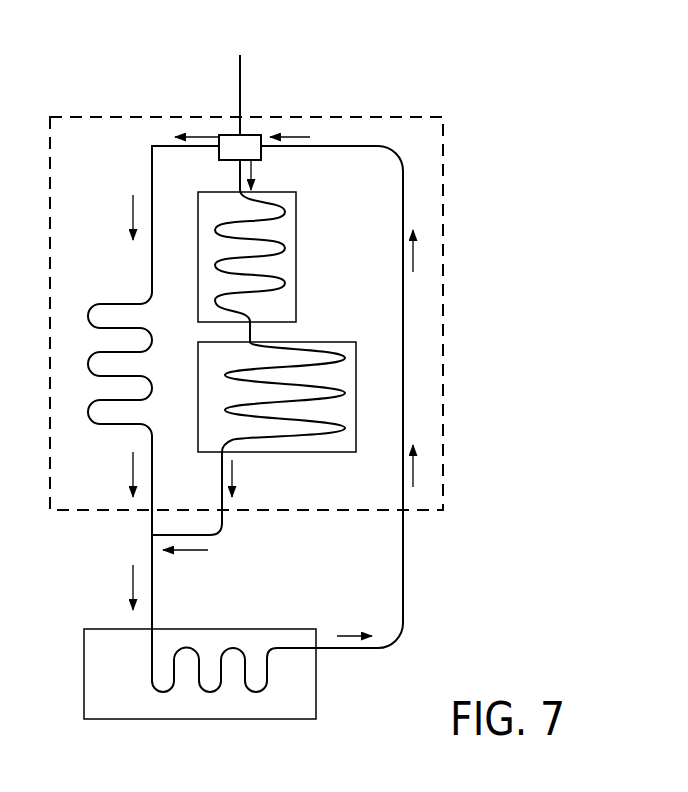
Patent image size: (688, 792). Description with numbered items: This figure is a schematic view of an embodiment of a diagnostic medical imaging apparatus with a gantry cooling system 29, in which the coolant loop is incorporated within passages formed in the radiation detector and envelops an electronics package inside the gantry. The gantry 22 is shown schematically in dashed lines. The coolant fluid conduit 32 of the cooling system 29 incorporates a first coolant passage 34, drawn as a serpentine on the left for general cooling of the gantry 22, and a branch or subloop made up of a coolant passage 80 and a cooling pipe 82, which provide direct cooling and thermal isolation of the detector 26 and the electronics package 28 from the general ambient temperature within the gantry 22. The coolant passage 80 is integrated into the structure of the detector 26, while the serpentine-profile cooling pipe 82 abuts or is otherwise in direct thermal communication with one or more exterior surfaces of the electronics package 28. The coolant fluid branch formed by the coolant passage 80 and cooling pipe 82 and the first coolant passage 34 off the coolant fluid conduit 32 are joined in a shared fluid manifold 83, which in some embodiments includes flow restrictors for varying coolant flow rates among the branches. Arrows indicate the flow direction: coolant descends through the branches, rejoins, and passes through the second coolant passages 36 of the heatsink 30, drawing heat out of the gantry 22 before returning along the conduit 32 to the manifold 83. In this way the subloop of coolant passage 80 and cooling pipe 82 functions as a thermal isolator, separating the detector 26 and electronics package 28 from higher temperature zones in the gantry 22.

The gantry 22 is at (445, 428).
The detector 26 is at (297, 278).
The electronics package 28 is at (335, 342).
The cooling system 29 is at (424, 584).
The heatsink 30 is at (324, 690).
The coolant fluid conduit 32 is at (358, 146).
The first coolant passage 34 is at (113, 304).
The second coolant passages 36 is at (221, 692).
The coolant passage 80 is at (268, 242).
The cooling pipe 82 is at (303, 437).
The fluid manifold 83 is at (240, 80).